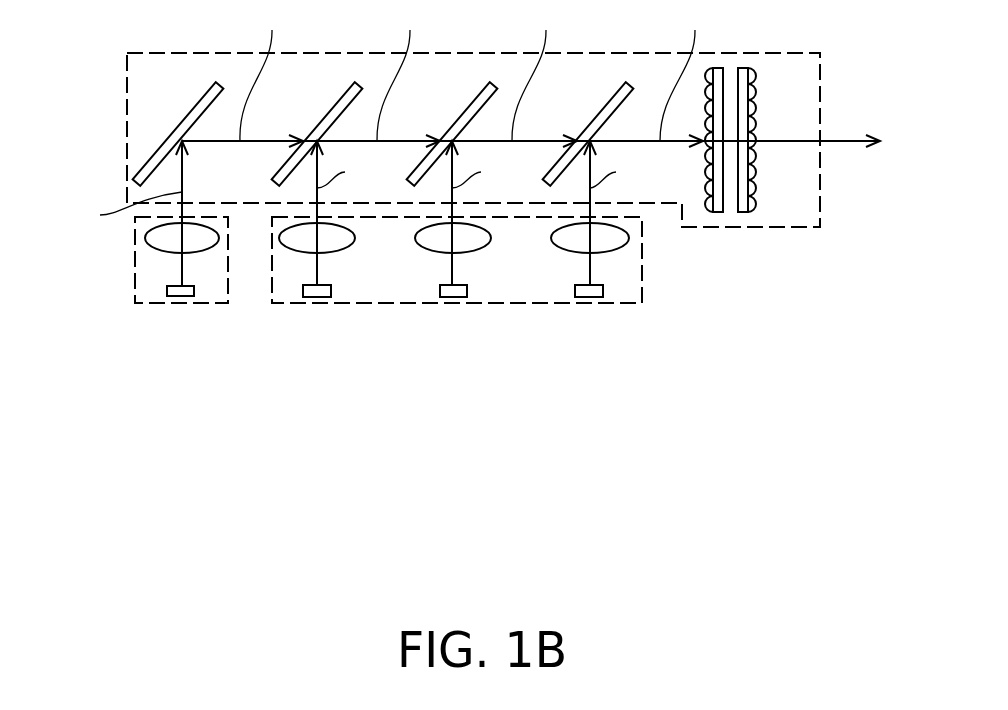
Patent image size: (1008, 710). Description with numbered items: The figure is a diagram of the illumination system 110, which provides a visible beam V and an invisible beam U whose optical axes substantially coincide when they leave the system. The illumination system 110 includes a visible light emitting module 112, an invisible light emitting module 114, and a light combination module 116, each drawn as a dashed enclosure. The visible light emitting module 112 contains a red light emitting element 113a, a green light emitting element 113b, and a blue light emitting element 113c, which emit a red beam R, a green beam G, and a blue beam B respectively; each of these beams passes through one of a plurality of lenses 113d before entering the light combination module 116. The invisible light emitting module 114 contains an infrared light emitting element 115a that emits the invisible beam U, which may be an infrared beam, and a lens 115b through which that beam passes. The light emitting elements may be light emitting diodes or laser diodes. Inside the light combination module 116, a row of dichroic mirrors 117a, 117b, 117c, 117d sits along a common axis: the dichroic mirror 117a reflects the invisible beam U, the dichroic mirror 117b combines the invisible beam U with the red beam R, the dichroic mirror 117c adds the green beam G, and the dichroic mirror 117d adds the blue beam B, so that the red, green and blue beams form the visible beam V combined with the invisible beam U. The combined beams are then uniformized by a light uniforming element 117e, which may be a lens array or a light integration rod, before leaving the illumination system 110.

The illumination system 110 is at (800, 490).
The visible light emitting module 112 is at (627, 308).
The red light emitting element 113a is at (312, 300).
The green light emitting element 113b is at (447, 300).
The blue light emitting element 113c is at (583, 305).
The lenses 113d is at (563, 248).
The invisible light emitting module 114 is at (153, 305).
The infrared light emitting element 115a is at (187, 297).
The lens 115b is at (143, 238).
The light combination module 116 is at (820, 72).
The dichroic mirror 117a is at (215, 83).
The dichroic mirror 117b is at (354, 83).
The dichroic mirror 117c is at (489, 83).
The dichroic mirror 117d is at (625, 84).
The light uniforming element 117e is at (742, 210).